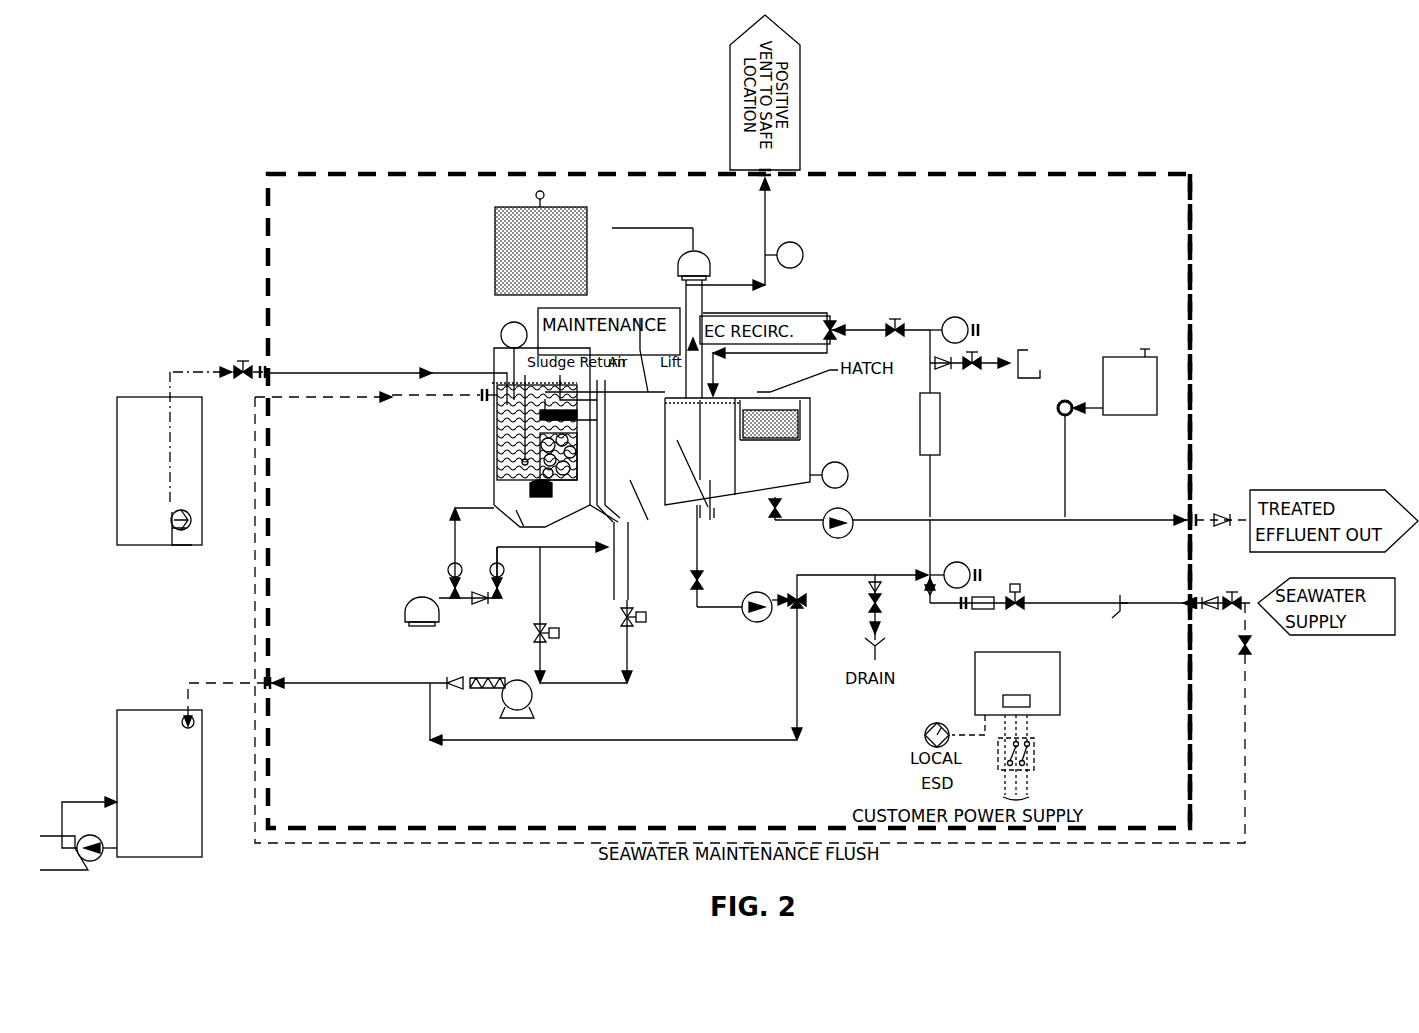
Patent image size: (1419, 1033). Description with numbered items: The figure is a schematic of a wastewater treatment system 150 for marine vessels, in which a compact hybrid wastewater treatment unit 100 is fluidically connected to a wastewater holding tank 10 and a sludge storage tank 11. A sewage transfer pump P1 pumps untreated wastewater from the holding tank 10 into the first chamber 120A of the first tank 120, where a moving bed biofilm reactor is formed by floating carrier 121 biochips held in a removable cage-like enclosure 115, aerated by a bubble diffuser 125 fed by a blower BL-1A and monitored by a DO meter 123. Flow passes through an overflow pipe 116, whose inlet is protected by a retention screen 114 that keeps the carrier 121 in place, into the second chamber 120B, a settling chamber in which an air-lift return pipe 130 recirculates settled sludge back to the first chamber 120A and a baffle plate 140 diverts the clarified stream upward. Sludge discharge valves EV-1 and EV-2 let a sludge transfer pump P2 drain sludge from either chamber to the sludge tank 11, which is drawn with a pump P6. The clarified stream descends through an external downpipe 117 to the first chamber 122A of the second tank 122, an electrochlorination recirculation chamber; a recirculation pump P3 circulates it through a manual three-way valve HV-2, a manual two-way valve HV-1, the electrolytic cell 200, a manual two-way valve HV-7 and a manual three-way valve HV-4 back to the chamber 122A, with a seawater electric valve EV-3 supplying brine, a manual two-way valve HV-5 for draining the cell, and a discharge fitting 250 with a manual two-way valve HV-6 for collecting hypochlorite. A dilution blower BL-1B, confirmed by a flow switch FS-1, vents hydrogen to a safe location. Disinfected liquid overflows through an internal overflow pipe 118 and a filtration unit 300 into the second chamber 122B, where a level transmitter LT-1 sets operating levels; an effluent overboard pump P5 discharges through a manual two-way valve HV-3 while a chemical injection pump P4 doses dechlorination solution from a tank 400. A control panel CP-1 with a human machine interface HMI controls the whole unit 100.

The hybrid wastewater treatment unit 100 is at (729, 478).
The wastewater treatment system 150 is at (1118, 468).
The wastewater holding tank 10 is at (138, 458).
The sludge storage tank 11 is at (138, 783).
The cage-like enclosure 115 is at (495, 248).
The DO meter 123 is at (480, 351).
The first tank 120 is at (494, 364).
The baffle plate 140 is at (600, 355).
The retention screen 114 is at (497, 424).
The carrier 121 is at (497, 459).
The bubble diffuser 125 is at (530, 495).
The first chamber 120A is at (520, 537).
The air-lift return pipe 130 is at (557, 612).
The second chamber 120B is at (648, 561).
The overflow pipe 116 is at (658, 506).
The external downpipe 117 is at (725, 512).
The second tank 122 is at (737, 441).
The first chamber of second tank 122A is at (740, 532).
The second chamber of second tank 122B is at (813, 449).
The internal overflow pipe 118 is at (798, 410).
The filtration unit 300 is at (809, 416).
The electrolytic cell 200 is at (940, 422).
The discharge fitting 250 is at (1044, 359).
The dechlorination solution tank 400 is at (1130, 382).
The sewage transfer pump P1 is at (202, 537).
The sludge transfer pump P2 is at (514, 699).
The recirculation pump P3 is at (756, 627).
The chemical injection pump P4 is at (1076, 443).
The effluent overboard pump P5 is at (847, 535).
The sludge tank pump P6 is at (78, 835).
The blower BL-1A is at (452, 619).
The dilution blower BL-1B is at (661, 244).
The flow switch FS-1 is at (825, 245).
The level transmitter LT-1 is at (848, 475).
The manual 2-way valve HV-1 is at (721, 579).
The manual 3-way valve HV-2 is at (803, 606).
The manual 2-way valve HV-3 is at (799, 507).
The manual 3-way valve HV-4 is at (848, 322).
The manual 2-way valve HV-5 is at (896, 617).
The manual 2-way valve HV-6 is at (967, 370).
The manual 2-way valve HV-7 is at (886, 337).
The sludge discharge valve EV-1 is at (558, 644).
The sludge discharge valve EV-2 is at (645, 626).
The seawater electric valve EV-3 is at (1014, 608).
The control panel CP-1 is at (1017, 683).
The human machine interface HMI is at (1030, 701).